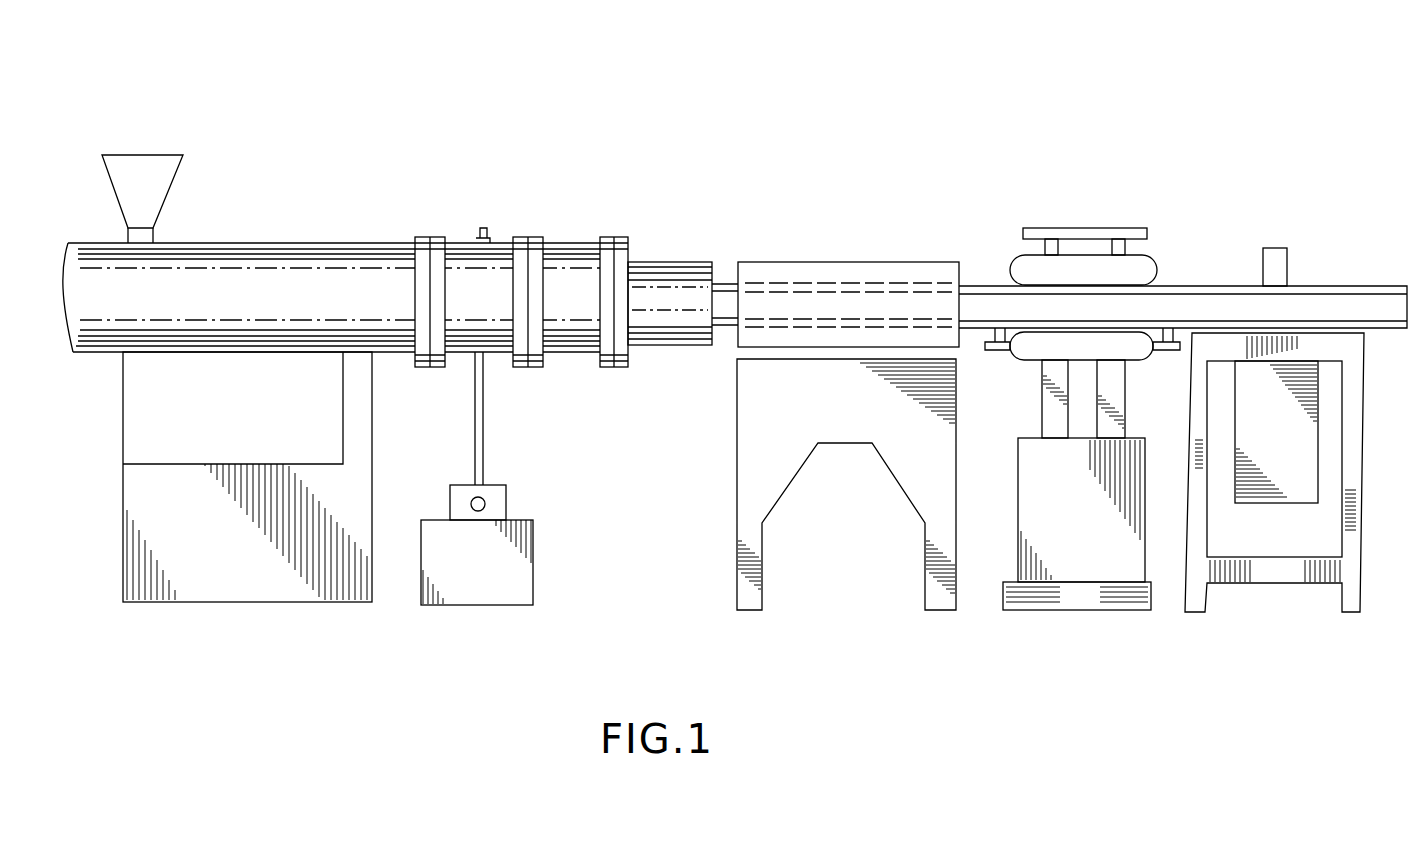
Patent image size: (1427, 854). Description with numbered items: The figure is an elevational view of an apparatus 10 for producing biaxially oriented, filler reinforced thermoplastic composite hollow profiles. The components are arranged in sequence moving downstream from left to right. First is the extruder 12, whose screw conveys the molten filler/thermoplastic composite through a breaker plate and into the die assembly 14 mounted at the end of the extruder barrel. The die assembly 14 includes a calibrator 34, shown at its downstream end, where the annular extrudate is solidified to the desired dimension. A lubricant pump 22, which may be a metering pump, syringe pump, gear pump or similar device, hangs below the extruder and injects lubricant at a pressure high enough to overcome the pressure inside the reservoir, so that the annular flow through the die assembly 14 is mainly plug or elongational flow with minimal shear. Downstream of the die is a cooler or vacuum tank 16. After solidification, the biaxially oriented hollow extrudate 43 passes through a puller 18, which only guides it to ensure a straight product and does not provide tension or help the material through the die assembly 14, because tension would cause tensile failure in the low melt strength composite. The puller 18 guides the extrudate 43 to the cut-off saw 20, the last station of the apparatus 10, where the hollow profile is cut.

The apparatus 10 is at (782, 106).
The extruder 12 is at (218, 220).
The die assembly 14 is at (536, 215).
The calibrator 34 is at (657, 238).
The cooler or vacuum tank 16 is at (817, 240).
The puller 18 is at (1072, 205).
The cut-off saw 20 is at (1273, 220).
The biaxially oriented hollow extrudate 43 is at (1348, 291).
The lubricant pump 22 is at (545, 490).